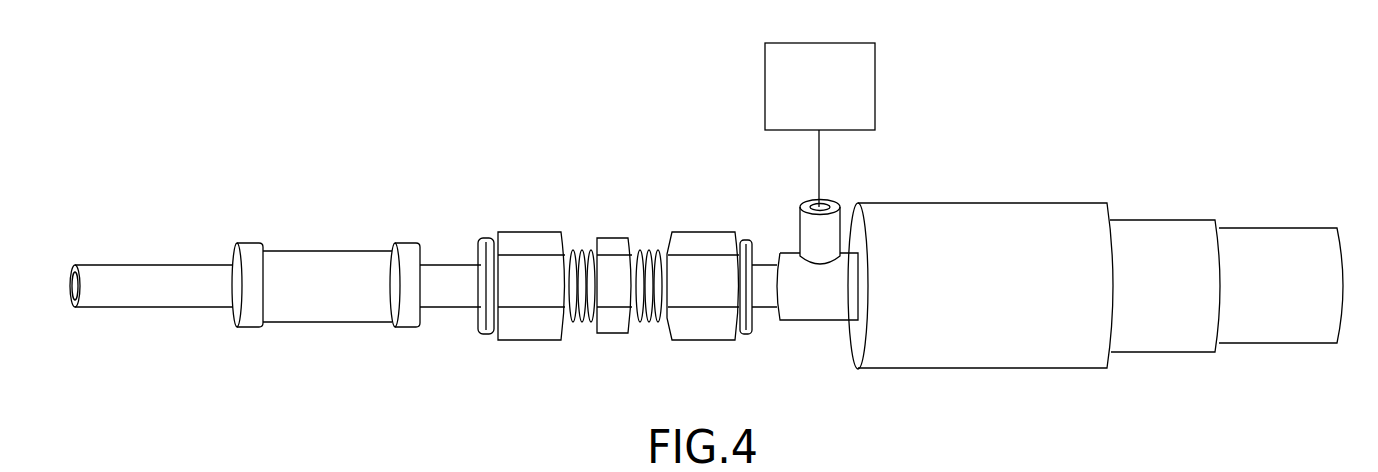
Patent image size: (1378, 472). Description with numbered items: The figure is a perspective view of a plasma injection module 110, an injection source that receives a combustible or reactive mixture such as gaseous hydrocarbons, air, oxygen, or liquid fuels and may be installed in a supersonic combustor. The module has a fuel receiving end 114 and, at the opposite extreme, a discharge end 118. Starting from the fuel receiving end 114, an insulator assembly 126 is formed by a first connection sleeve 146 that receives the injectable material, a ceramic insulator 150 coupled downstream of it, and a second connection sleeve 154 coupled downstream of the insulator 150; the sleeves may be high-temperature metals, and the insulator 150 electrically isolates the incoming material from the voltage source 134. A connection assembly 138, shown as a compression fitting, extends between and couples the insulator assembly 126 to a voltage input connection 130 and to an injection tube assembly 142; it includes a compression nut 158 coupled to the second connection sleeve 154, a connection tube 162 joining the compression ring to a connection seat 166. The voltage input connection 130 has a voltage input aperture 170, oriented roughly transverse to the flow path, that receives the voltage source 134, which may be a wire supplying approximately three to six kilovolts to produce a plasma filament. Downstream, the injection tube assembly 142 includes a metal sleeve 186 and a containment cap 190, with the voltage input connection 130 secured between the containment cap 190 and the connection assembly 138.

The plasma injection module 110 is at (170, 125).
The fuel receiving end 114 is at (82, 244).
The discharge end 118 is at (1313, 206).
The insulator assembly 126 is at (440, 203).
The voltage input connection 130 is at (805, 230).
The voltage source 134 is at (803, 121).
The connection assembly 138 is at (737, 188).
The injection tube assembly 142 is at (1305, 170).
The first connection sleeve 146 is at (183, 283).
The insulator 150 is at (326, 270).
The second connection sleeve 154 is at (452, 268).
The compression nut 158 is at (530, 265).
The connection tube 162 is at (615, 255).
The connection seat 166 is at (700, 265).
The voltage input aperture 170 is at (860, 176).
The sleeve 186 is at (1150, 238).
The containment cap 190 is at (972, 235).